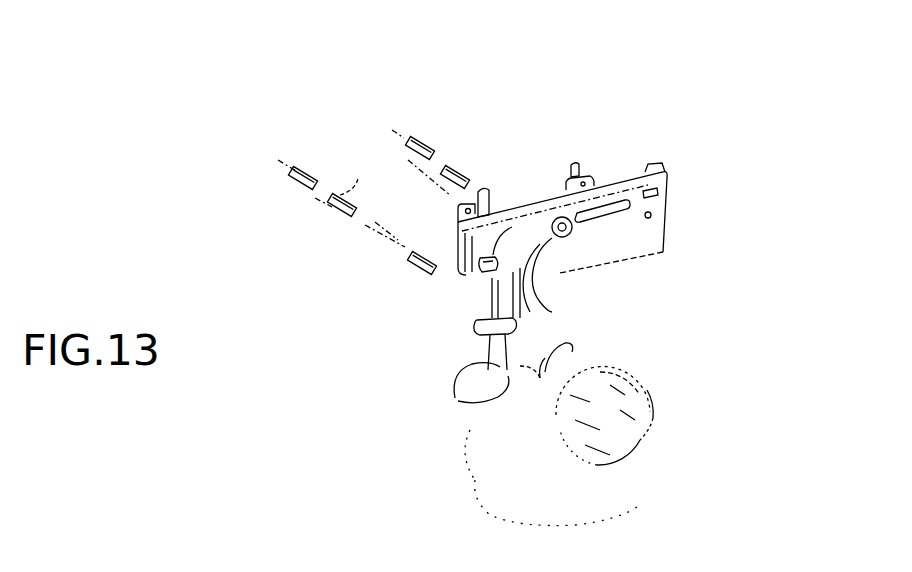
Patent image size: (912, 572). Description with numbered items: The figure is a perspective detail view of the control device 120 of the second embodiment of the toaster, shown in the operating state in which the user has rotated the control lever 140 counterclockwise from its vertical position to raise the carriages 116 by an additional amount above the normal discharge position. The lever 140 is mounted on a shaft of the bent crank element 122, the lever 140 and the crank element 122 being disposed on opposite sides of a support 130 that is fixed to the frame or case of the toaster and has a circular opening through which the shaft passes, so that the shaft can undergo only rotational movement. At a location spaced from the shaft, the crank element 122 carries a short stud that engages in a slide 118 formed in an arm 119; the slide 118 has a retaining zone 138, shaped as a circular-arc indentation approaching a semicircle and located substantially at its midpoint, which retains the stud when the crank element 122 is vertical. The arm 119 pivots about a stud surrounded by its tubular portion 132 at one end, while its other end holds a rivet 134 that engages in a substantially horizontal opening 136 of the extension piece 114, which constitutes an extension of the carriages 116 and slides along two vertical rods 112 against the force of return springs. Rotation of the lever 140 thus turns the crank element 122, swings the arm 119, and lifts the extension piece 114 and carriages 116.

The vertical rods 112 is at (483, 190).
The extension piece 114 is at (666, 168).
The carriages 116 is at (412, 150).
The slide 118 is at (487, 267).
The arm 119 is at (537, 228).
The control device 120 is at (676, 428).
The bent crank element 122 is at (523, 353).
The support 130 is at (512, 462).
The tubular portion 132 is at (470, 385).
The rivet 134 is at (573, 228).
The opening 136 is at (612, 205).
The retaining zone 138 is at (520, 302).
The control lever 140 is at (620, 427).